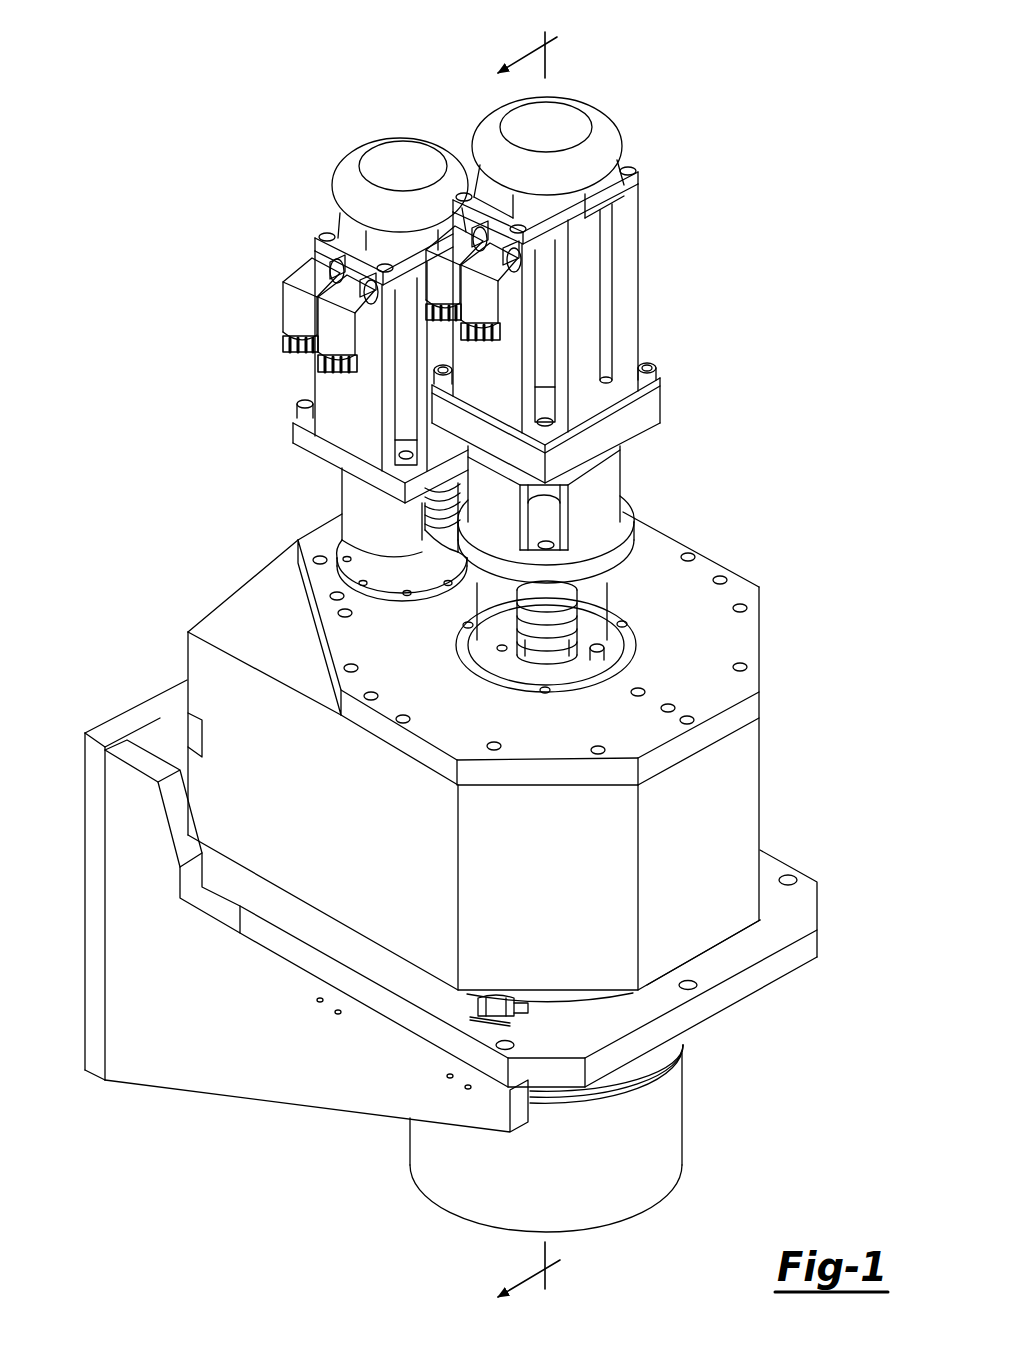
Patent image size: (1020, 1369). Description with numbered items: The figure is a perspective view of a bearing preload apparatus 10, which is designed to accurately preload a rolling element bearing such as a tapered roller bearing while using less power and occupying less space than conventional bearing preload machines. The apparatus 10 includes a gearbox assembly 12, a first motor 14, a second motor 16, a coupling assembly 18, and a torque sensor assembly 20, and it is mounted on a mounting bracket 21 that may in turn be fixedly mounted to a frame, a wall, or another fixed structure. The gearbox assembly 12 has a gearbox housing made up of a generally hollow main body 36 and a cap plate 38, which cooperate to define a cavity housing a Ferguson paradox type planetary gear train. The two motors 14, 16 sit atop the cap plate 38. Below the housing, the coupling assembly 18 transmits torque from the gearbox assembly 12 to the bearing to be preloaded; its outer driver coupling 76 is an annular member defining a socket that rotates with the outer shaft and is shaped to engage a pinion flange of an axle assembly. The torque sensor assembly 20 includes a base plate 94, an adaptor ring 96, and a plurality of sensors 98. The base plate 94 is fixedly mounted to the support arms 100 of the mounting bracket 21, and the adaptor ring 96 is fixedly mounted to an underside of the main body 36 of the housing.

The bearing preload apparatus 10 is at (333, 82).
The gearbox assembly 12 is at (764, 751).
The first motor 14 is at (645, 282).
The second motor 16 is at (343, 155).
The coupling assembly 18 is at (688, 1113).
The torque sensor assembly 20 is at (486, 1022).
The mounting bracket 21 is at (130, 1078).
The main body 36 is at (745, 790).
The cap plate 38 is at (731, 640).
The outer driver coupling 76 is at (617, 1190).
The base plate 94 is at (788, 918).
The adaptor ring 96 is at (588, 997).
The sensors 98 is at (478, 1003).
The support arms 100 is at (231, 1060).